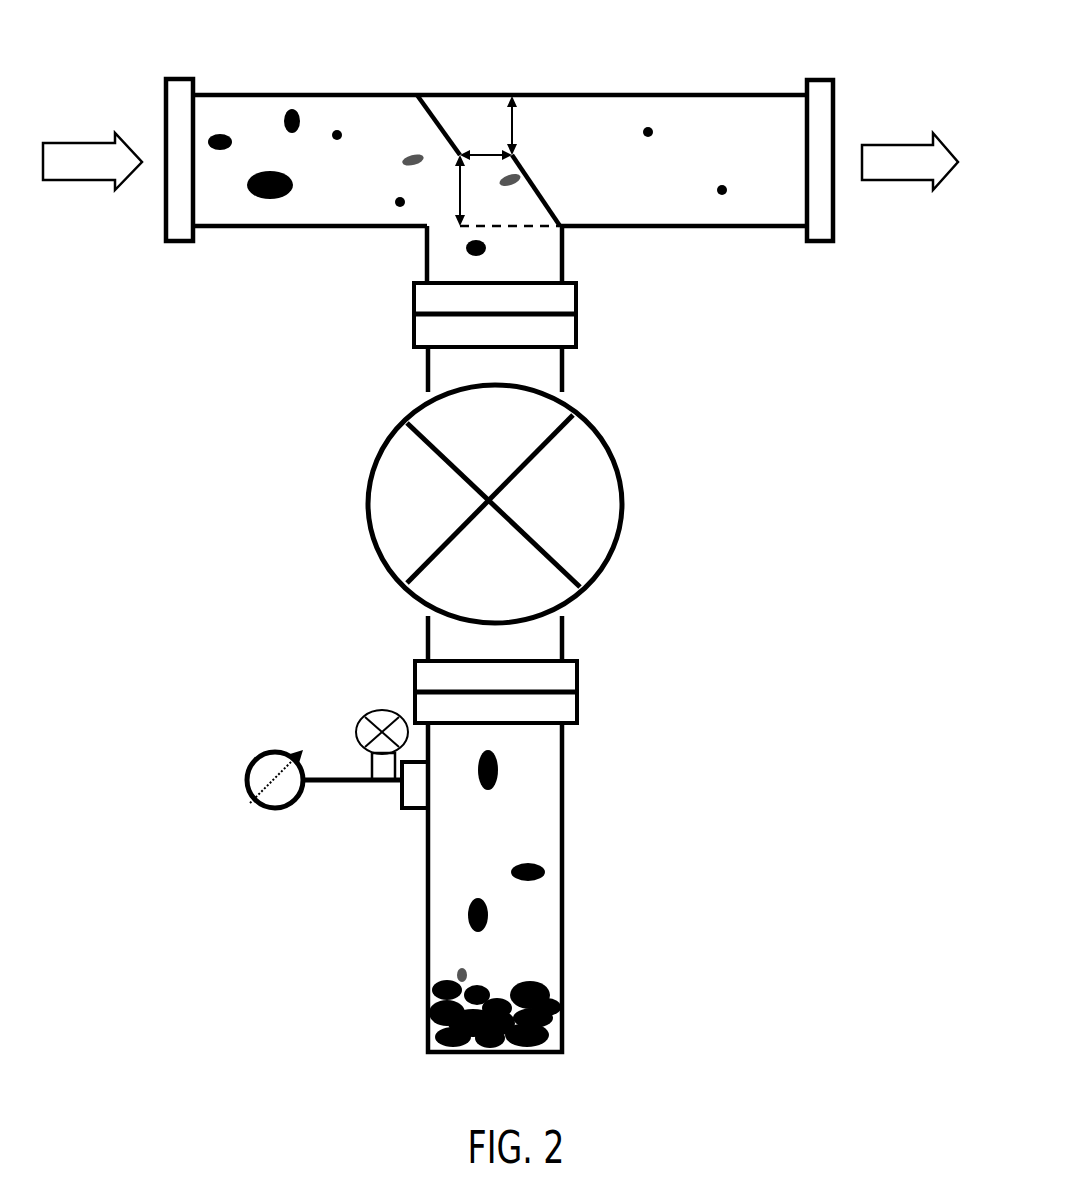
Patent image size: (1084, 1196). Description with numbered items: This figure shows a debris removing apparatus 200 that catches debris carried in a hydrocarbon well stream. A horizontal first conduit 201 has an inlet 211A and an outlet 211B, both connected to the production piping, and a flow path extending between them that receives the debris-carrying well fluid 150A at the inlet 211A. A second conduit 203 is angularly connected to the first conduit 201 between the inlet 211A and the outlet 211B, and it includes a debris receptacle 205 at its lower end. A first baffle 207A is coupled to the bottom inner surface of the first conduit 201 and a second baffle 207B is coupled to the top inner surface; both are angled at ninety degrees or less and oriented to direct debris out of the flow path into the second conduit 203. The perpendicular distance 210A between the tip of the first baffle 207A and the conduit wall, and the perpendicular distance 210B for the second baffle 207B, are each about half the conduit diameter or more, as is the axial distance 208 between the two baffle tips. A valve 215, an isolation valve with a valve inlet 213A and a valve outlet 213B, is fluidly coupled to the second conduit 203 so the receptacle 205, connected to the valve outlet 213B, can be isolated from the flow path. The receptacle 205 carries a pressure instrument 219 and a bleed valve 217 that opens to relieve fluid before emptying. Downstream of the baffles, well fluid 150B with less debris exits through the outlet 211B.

The debris removing apparatus 200 is at (747, 978).
The debris-carrying well fluid 150A is at (92, 161).
The well fluid with less debris 150B is at (910, 161).
The first conduit 201 is at (743, 228).
The second conduit 203 is at (427, 265).
The debris receptacle 205 is at (563, 875).
The first baffle 207A is at (555, 213).
The second baffle 207B is at (423, 115).
The axial distance 208 is at (487, 152).
The perpendicular distance 210A is at (517, 127).
The perpendicular distance 210B is at (455, 178).
The inlet 211A is at (177, 243).
The outlet 211B is at (818, 243).
The valve inlet 213A is at (413, 320).
The valve outlet 213B is at (577, 690).
The valve 215 is at (368, 507).
The bleed valve 217 is at (357, 730).
The pressure instrument 219 is at (247, 780).